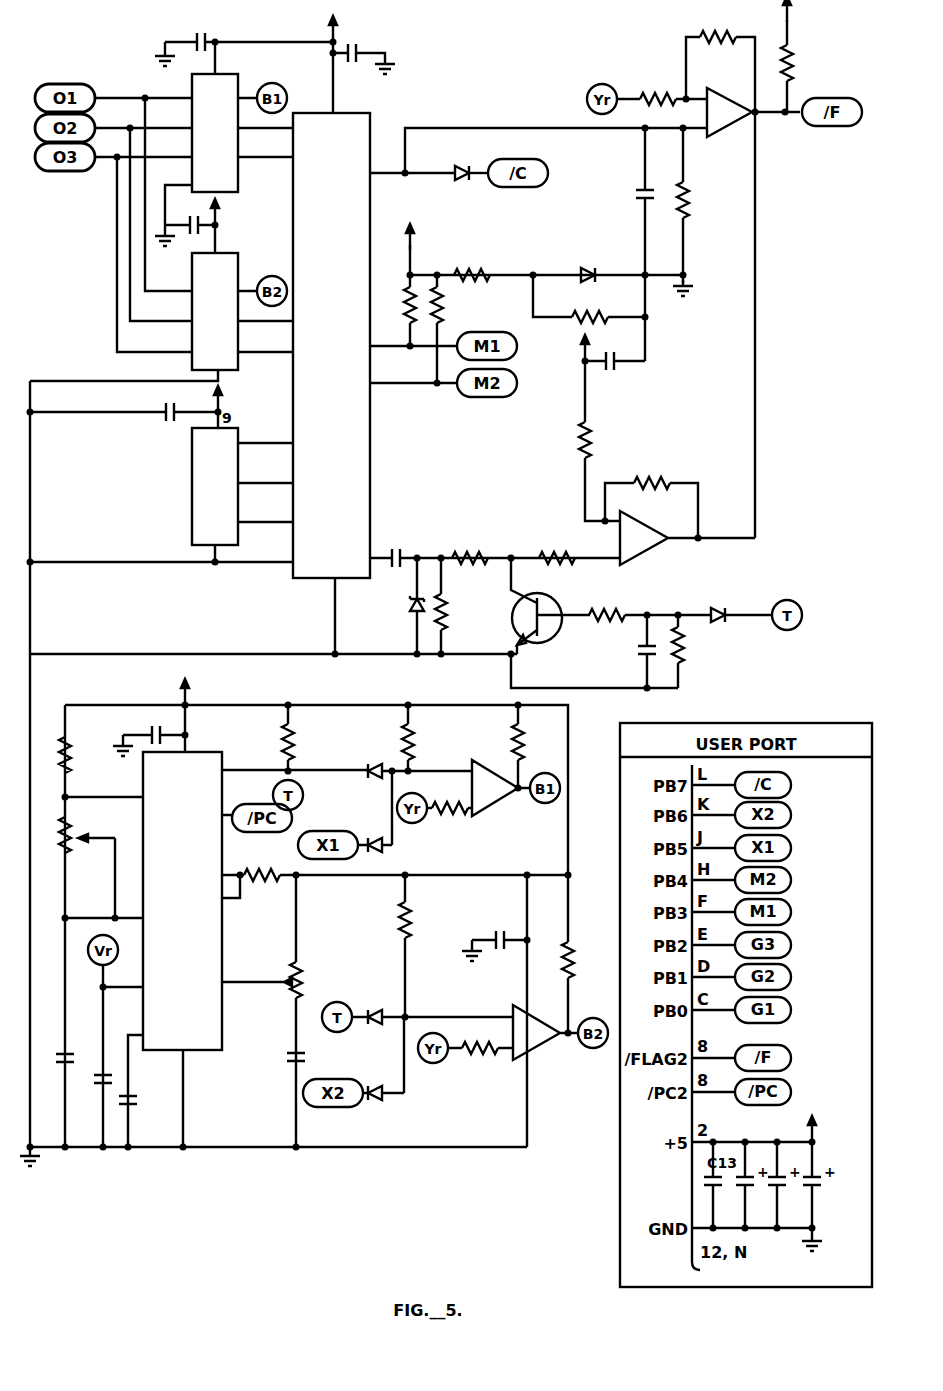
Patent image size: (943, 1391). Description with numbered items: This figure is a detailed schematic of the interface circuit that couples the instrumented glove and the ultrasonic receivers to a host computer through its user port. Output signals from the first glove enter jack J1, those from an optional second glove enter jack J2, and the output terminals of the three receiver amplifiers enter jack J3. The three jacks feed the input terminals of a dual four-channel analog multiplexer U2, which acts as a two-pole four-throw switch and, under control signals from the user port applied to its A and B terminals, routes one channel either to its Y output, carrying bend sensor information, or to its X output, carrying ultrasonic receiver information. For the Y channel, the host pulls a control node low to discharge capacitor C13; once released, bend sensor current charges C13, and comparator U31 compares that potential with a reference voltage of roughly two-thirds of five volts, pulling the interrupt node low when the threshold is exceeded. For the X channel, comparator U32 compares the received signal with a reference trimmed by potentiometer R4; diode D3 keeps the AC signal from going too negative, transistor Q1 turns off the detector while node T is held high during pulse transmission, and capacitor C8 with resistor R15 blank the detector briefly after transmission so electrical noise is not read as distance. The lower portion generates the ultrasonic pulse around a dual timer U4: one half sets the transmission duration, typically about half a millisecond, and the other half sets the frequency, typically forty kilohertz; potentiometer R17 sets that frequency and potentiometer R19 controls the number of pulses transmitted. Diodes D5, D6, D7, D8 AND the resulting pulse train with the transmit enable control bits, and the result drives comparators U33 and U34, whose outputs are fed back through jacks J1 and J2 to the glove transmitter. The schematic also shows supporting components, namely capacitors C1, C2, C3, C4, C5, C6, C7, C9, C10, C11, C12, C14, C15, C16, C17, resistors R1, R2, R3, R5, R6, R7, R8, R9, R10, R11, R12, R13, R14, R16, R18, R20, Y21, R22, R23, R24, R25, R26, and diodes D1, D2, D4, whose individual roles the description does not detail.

The jack J1 is at (229, 133).
The jack J2 is at (161, 316).
The jack J3 is at (242, 494).
The dual four-channel analog multiplexer U2 is at (331, 383).
The dual timer U4 is at (235, 949).
The comparator U31 is at (742, 112).
The comparator U32 is at (687, 538).
The comparator U33 is at (501, 788).
The comparator U34 is at (545, 1033).
The transistor Q1 is at (550, 606).
The capacitor C1 is at (362, 64).
The capacitor C2 is at (151, 733).
The capacitor C3 is at (496, 1011).
The capacitor C4 is at (244, 36).
The capacitor C5 is at (187, 226).
The capacitor C6 is at (595, 348).
The capacitor C7 is at (396, 546).
The capacitor C8 is at (635, 653).
The capacitor C9 is at (53, 1049).
The capacitor C10 is at (97, 1070).
The capacitor C11 is at (145, 1089).
The capacitor C12 is at (279, 1056).
The capacitor C13 is at (628, 201).
The capacitor C14 is at (747, 1167).
The capacitor C15 is at (779, 1167).
The capacitor C16 is at (816, 1167).
The capacitor C17 is at (125, 407).
The resistor R1 is at (397, 312).
The resistor R2 is at (450, 331).
The resistor R3 is at (472, 263).
The potentiometer R4 is at (591, 318).
The resistor R5 is at (694, 212).
The resistor R6 is at (651, 87).
The resistor R7 is at (720, 272).
The resistor R8 is at (802, 56).
The resistor R9 (100K) R9 is at (466, 606).
The resistor R10 is at (470, 545).
The resistor R11 is at (557, 545).
The resistor R12 is at (581, 443).
The resistor R13 is at (651, 495).
The resistor R14 is at (649, 603).
The resistor R15 is at (697, 651).
The resistor R16 is at (101, 769).
The potentiometer R17 is at (101, 859).
The resistor R18 is at (307, 738).
The potentiometer R19 is at (280, 1011).
The resistor R20 is at (427, 740).
The resistor Y21 is at (449, 795).
The resistor R22 is at (480, 1036).
The resistor R23 is at (424, 948).
The resistor R24 is at (537, 746).
The resistor R25 is at (587, 954).
The resistor R26 is at (408, 864).
The diode D1 is at (469, 161).
The diode D2 is at (588, 262).
The diode D3 is at (403, 606).
The diode D4 is at (739, 603).
The diode D5 is at (417, 793).
The diode D6 is at (375, 833).
The diode D7 is at (432, 1040).
The diode D8 is at (383, 1081).